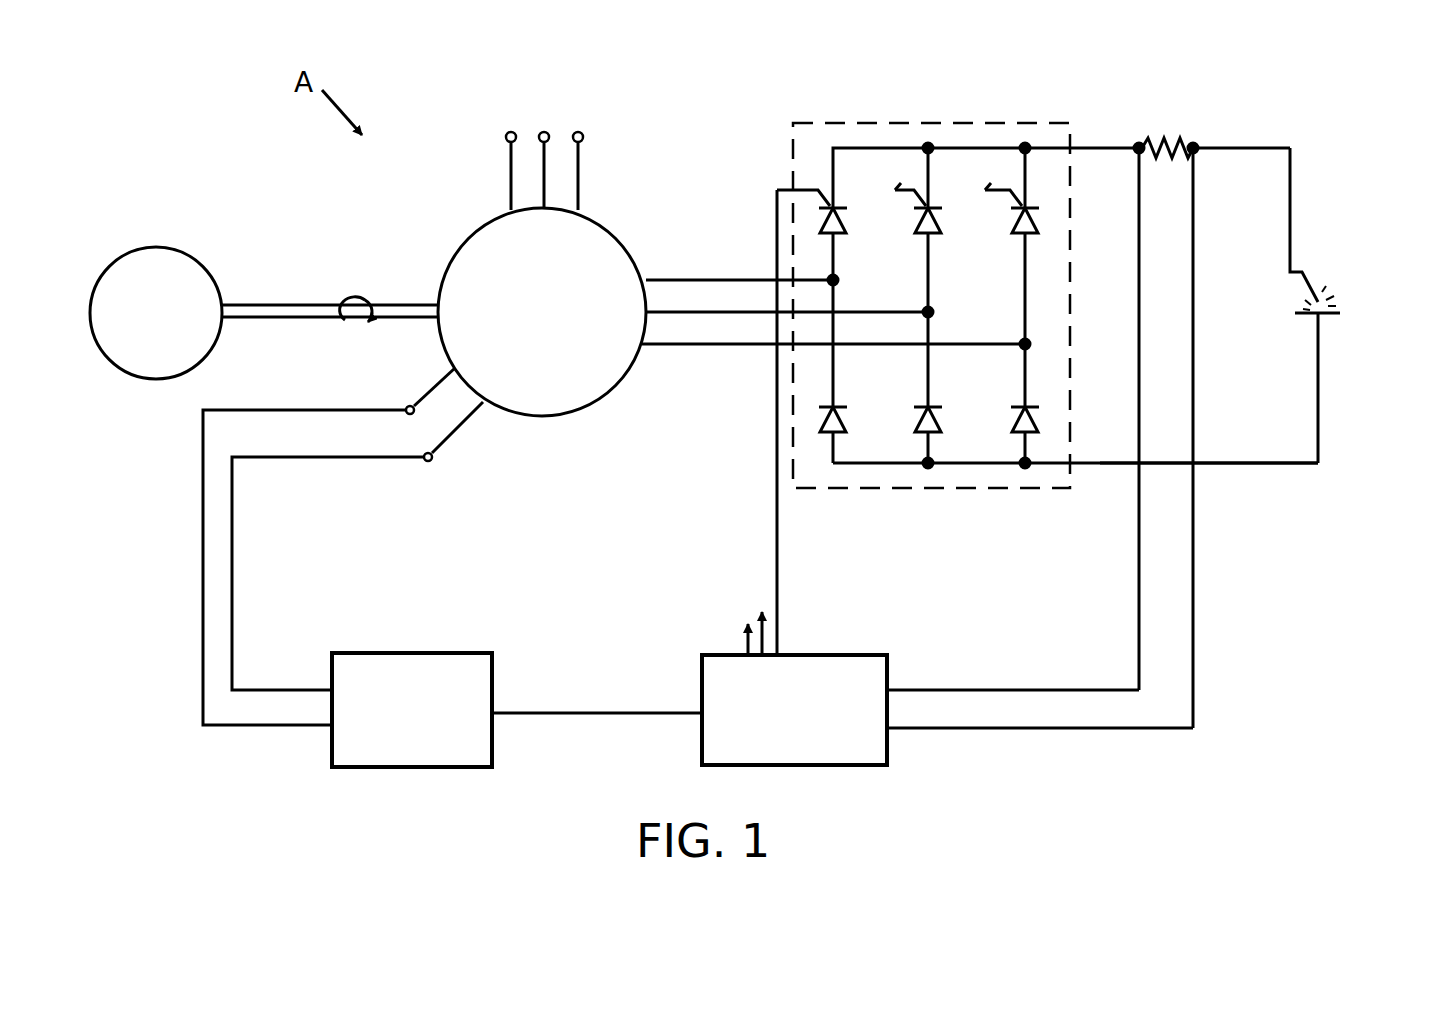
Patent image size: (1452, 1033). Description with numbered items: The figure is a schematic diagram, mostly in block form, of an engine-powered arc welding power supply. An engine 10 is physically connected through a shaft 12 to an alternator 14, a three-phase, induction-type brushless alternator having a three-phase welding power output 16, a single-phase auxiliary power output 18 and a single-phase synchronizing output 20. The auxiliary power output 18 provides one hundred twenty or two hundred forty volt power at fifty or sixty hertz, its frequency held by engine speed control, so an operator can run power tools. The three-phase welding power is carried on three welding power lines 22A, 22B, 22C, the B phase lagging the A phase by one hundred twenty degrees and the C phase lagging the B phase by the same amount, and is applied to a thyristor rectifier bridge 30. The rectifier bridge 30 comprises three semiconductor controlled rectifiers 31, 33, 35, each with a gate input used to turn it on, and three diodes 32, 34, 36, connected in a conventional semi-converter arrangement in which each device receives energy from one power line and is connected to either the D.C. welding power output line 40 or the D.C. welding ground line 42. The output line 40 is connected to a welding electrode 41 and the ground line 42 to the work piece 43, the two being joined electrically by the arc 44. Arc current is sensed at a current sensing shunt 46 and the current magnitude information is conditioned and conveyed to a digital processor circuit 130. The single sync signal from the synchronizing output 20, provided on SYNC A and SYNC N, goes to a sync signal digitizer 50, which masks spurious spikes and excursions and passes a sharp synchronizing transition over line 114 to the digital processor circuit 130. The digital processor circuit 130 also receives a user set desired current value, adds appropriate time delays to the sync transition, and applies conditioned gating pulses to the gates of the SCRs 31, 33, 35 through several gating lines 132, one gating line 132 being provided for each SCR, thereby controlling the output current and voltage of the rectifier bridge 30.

The engine 10 is at (148, 245).
The shaft 12 is at (275, 305).
The alternator 14 is at (470, 246).
The three-phase welding power output 16 is at (832, 339).
The single-phase auxiliary power output 18 is at (590, 178).
The single-phase synchronizing output 20 is at (466, 430).
The welding power line 22A is at (668, 278).
The welding power line 22B is at (677, 315).
The welding power line 22C is at (732, 347).
The thyristor rectifier bridge 30 is at (1047, 258).
The semiconductor controlled rectifier 31 is at (840, 228).
The diode 32 is at (1040, 422).
The semiconductor controlled rectifier 33 is at (937, 232).
The diode 34 is at (845, 421).
The semiconductor controlled rectifier 35 is at (1037, 232).
The diode 36 is at (940, 421).
The D.C. welding power output line 40 is at (1103, 147).
The welding electrode 41 is at (1310, 290).
The D.C. welding ground line 42 is at (1232, 466).
The work piece 43 is at (1330, 316).
The arc 44 is at (1338, 304).
The current sensing shunt 46 is at (1178, 147).
The sync signal digitizer 50 is at (438, 654).
The line 114 is at (582, 712).
The digital processor circuit 130 is at (850, 660).
The gating line 132 is at (775, 566).